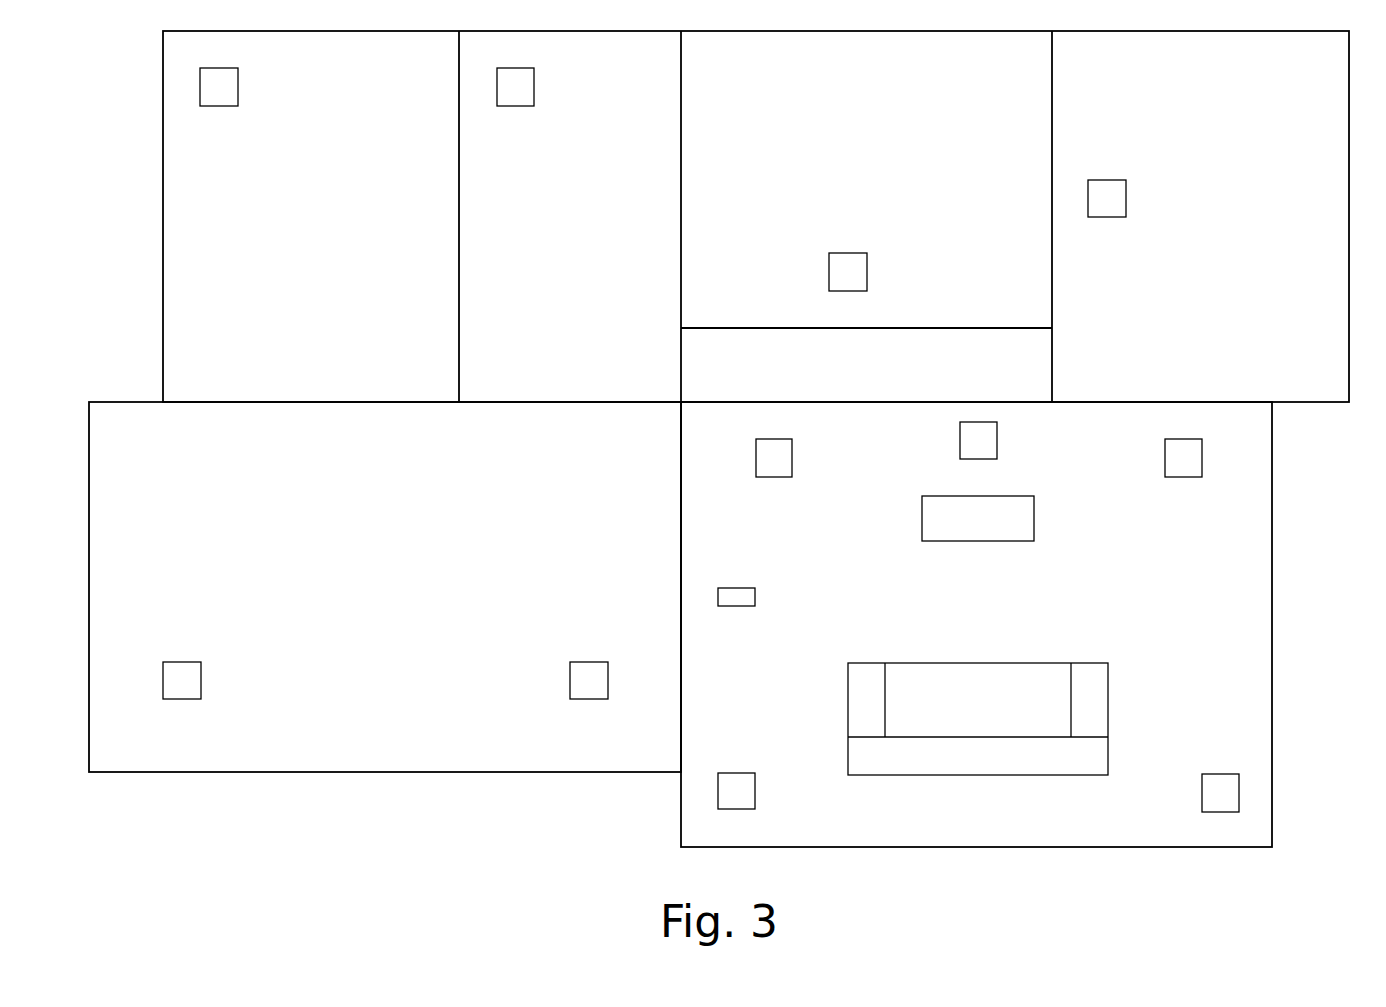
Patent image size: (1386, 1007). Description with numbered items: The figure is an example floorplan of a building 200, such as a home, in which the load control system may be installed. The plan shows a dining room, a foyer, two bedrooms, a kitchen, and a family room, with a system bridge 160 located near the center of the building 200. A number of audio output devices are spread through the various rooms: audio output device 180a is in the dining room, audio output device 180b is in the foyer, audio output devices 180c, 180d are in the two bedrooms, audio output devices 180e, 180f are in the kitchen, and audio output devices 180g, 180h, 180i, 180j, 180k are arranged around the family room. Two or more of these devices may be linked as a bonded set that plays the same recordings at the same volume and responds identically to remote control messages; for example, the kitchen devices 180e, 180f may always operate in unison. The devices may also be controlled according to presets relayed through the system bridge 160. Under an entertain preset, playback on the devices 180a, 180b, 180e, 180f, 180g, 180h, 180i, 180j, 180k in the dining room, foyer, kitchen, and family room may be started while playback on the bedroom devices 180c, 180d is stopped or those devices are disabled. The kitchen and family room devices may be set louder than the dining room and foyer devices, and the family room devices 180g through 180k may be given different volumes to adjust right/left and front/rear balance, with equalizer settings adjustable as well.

The building 200 is at (442, 860).
The system bridge 160 is at (737, 606).
The audio output device 180a is at (228, 84).
The audio output device 180b is at (518, 82).
The audio output device 180c is at (852, 270).
The audio output device 180d is at (1112, 192).
The audio output device 180e is at (178, 672).
The audio output device 180f is at (593, 690).
The audio output device 180g is at (778, 466).
The audio output device 180h is at (978, 442).
The audio output device 180i is at (1178, 460).
The audio output device 180j is at (741, 790).
The audio output device 180k is at (1216, 790).